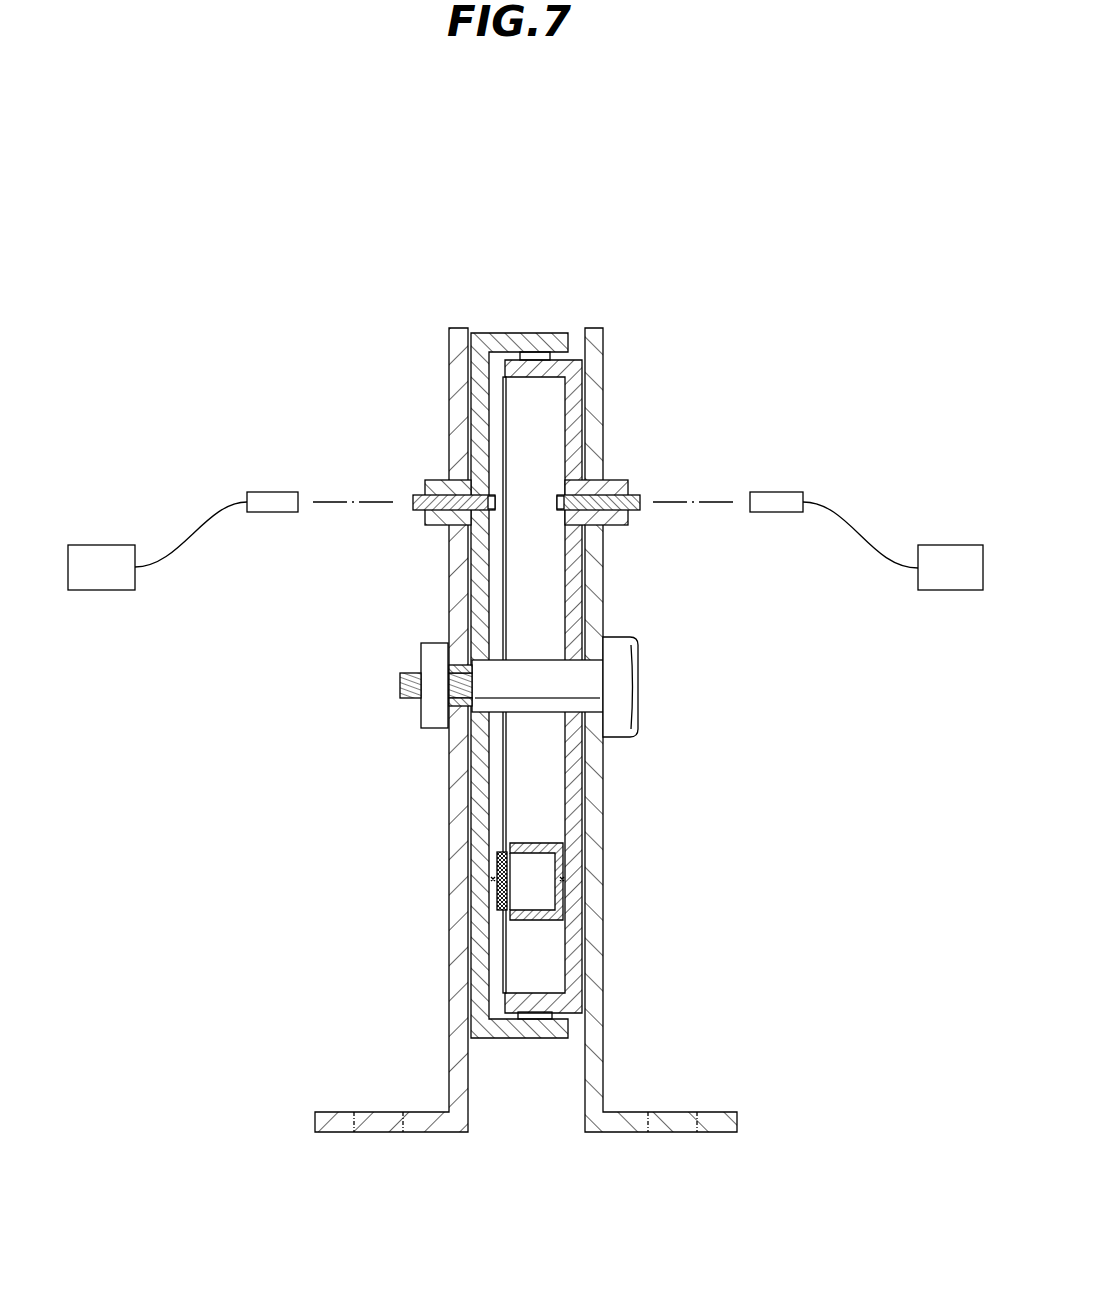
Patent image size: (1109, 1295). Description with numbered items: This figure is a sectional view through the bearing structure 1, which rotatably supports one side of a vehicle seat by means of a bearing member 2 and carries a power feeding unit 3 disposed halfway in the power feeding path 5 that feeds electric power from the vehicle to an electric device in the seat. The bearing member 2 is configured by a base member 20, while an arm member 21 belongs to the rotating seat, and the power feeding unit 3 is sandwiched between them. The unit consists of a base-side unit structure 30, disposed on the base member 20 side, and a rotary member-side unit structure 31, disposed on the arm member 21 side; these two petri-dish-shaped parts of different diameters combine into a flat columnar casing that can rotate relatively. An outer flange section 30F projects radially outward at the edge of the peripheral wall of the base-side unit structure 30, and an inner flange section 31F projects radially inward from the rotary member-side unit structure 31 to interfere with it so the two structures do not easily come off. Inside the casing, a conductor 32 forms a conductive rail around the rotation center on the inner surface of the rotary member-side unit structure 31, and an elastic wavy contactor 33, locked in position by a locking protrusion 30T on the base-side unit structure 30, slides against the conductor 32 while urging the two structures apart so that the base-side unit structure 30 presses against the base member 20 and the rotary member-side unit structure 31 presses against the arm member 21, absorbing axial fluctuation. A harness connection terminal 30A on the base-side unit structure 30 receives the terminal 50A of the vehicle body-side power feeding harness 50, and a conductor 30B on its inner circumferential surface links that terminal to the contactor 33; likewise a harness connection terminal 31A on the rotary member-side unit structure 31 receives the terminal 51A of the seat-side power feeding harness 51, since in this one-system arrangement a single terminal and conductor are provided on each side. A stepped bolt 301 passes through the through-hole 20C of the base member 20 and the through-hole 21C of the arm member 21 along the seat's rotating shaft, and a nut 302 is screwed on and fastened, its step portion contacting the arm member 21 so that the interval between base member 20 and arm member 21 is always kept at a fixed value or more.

The bearing structure 1 is at (802, 173).
The bearing member 2 is at (554, 730).
The power feeding unit 3 is at (521, 685).
The power feeding path 5 is at (866, 480).
The base member 20 is at (608, 1068).
The through-hole 20C is at (573, 648).
The arm member 21 is at (457, 1062).
The through-hole 21C is at (448, 683).
The base-side unit structure 30 is at (515, 432).
The harness connection terminal 30A is at (628, 485).
The conductor 30B is at (580, 528).
The outer flange section 30F is at (513, 352).
The locking protrusion 30T is at (533, 843).
The rotary member-side unit structure 31 is at (483, 335).
The harness connection terminal 31A is at (425, 487).
The inner flange section 31F is at (560, 360).
The conductor 32 is at (446, 480).
The contactor 33 is at (496, 905).
The power feeding harness 50 is at (947, 528).
The terminal 50A is at (775, 492).
The power feeding harness 51 is at (128, 526).
The terminal 51A is at (273, 500).
The stepped bolt 301 is at (585, 690).
The nut 302 is at (428, 660).